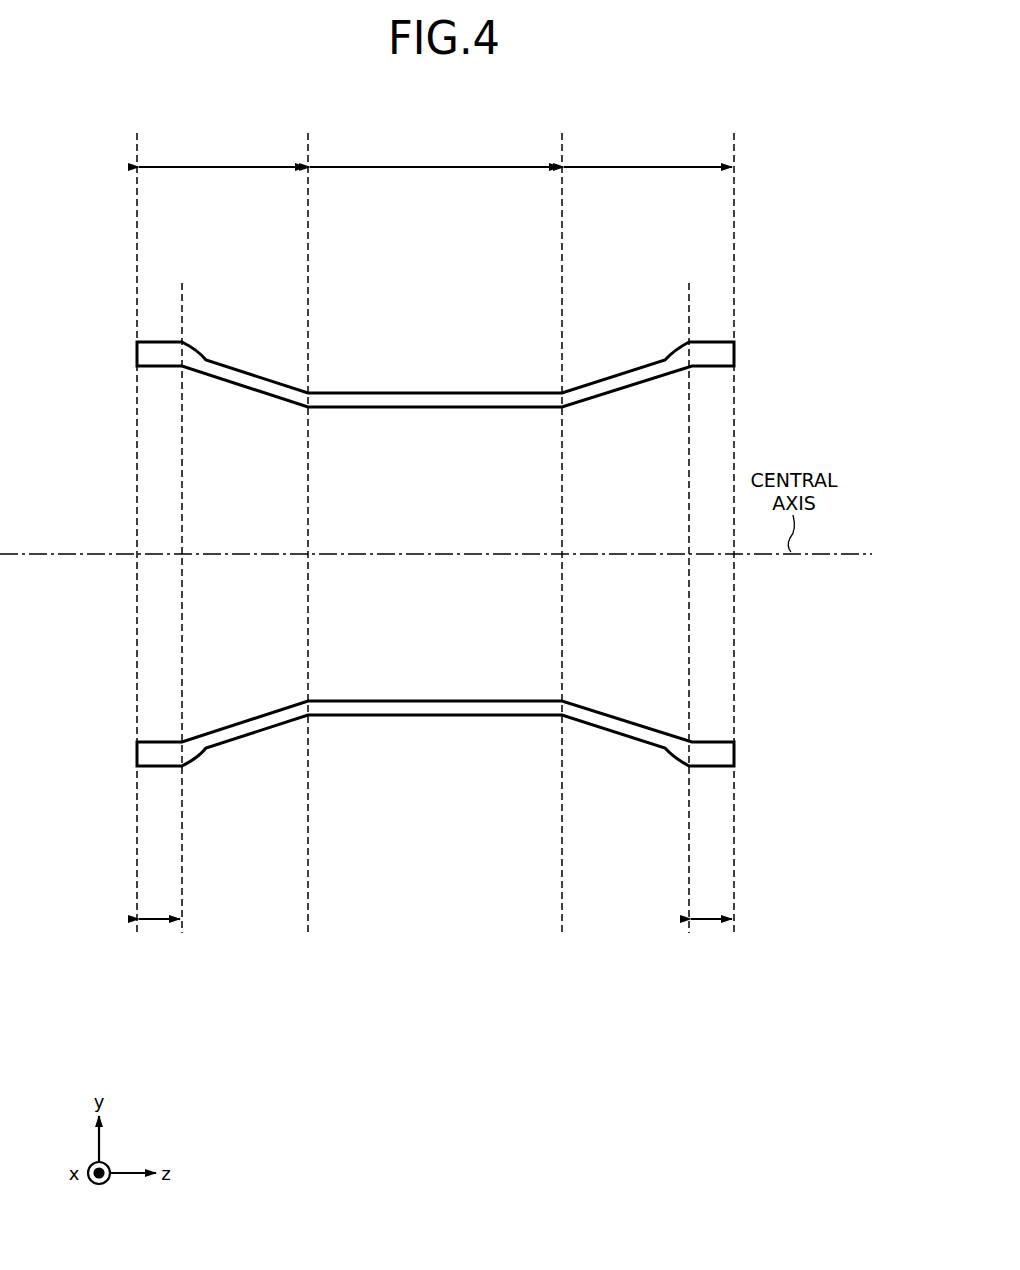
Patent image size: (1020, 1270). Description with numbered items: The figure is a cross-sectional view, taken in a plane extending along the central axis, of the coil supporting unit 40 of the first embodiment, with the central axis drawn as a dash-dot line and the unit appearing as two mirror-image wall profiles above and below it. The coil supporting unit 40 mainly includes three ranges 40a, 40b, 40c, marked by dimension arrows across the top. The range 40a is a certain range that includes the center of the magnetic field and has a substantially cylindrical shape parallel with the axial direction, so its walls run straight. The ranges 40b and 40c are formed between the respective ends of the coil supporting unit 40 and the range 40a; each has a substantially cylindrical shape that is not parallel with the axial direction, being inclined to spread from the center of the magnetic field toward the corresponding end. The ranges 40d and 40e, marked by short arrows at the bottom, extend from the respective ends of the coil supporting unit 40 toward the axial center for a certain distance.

The coil supporting unit 40 is at (735, 352).
The range 40a is at (437, 165).
The range 40b is at (222, 165).
The range 40c is at (650, 165).
The range 40d is at (160, 921).
The range 40e is at (711, 921).